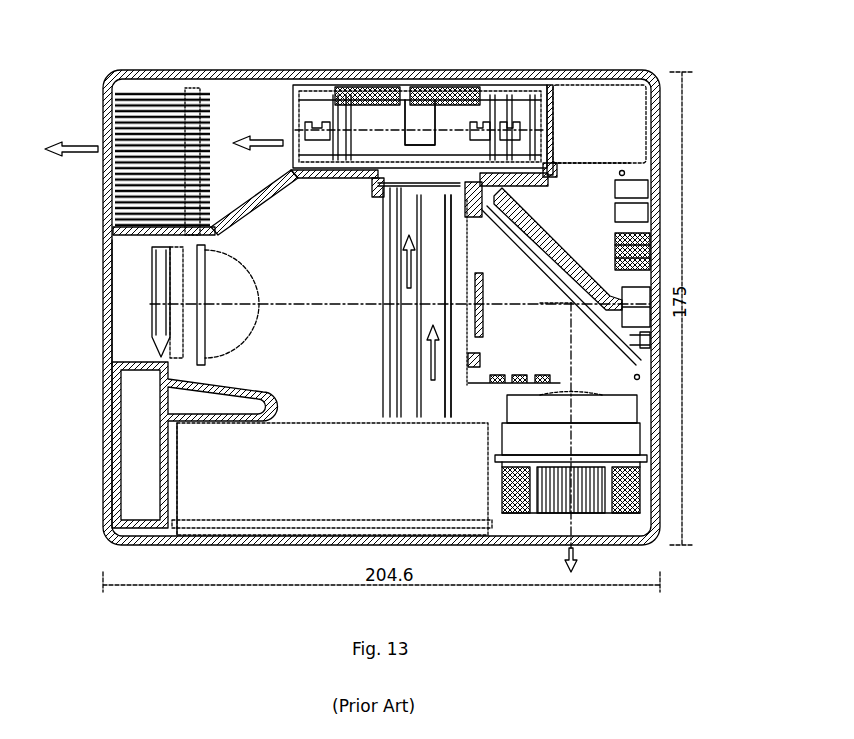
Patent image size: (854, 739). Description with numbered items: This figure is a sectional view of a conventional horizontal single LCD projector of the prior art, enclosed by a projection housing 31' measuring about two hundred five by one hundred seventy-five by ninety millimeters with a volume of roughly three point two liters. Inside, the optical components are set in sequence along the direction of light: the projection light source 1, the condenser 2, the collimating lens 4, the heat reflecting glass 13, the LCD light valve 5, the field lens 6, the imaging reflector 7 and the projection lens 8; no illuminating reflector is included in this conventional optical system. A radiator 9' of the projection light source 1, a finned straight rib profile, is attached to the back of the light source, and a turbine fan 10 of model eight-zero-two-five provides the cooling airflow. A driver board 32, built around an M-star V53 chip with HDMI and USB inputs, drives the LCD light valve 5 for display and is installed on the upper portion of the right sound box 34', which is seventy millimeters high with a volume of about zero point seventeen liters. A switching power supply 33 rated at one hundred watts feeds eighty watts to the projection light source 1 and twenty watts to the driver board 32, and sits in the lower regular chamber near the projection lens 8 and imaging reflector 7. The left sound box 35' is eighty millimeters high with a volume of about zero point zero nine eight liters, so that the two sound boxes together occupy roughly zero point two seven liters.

The projection light source 1 is at (201, 247).
The condenser 2 is at (179, 251).
The collimating lens 4 is at (400, 220).
The LCD light valve 5 is at (418, 194).
The field lens 6 is at (447, 194).
The imaging reflector 7 is at (645, 356).
The projection lens 8 is at (629, 412).
The radiator 9' is at (162, 139).
The fan 10 is at (410, 95).
The heat reflecting glass 13 is at (386, 205).
The projection housing 31' is at (80, 302).
The driver board 32 is at (626, 173).
The switching power supply 33 is at (188, 463).
The right sound box 34' is at (425, 307).
The left sound box 35' is at (163, 445).